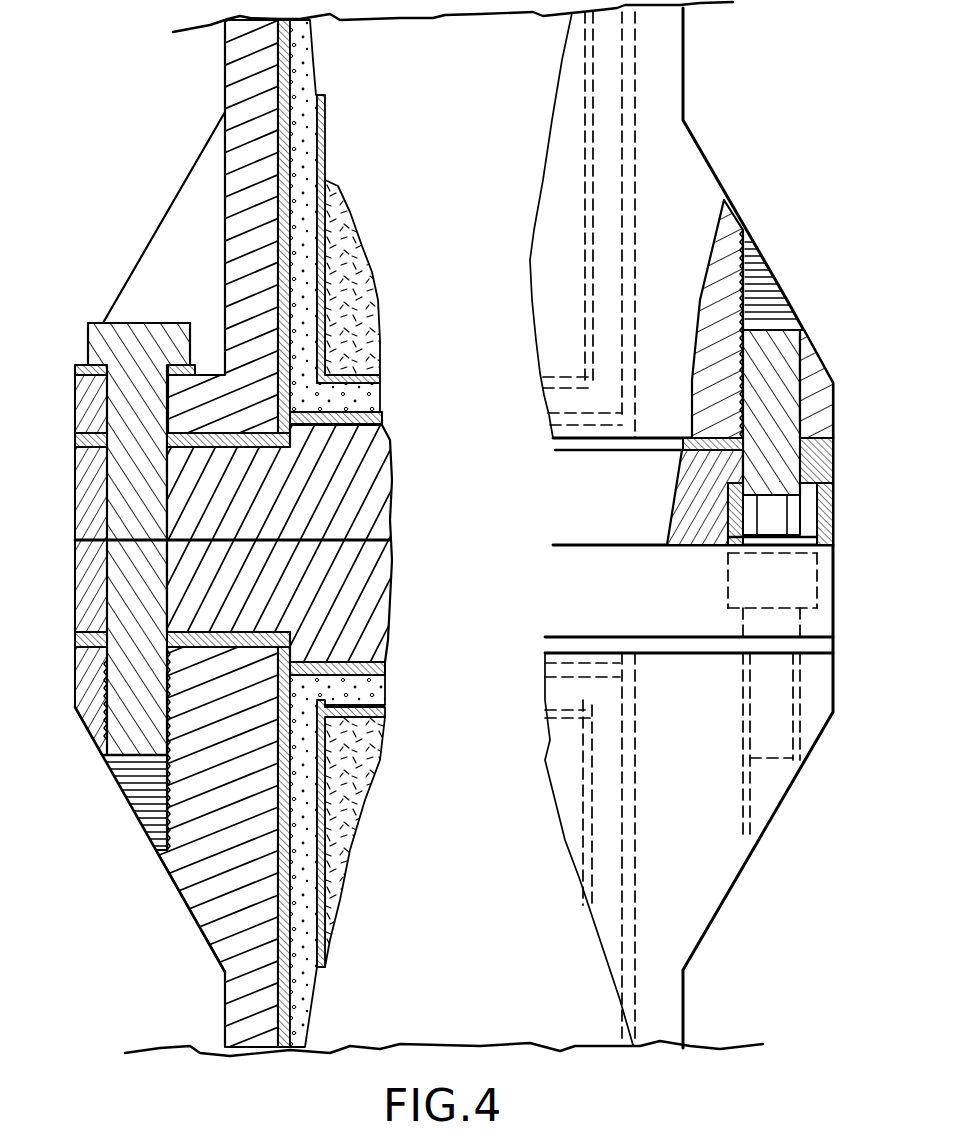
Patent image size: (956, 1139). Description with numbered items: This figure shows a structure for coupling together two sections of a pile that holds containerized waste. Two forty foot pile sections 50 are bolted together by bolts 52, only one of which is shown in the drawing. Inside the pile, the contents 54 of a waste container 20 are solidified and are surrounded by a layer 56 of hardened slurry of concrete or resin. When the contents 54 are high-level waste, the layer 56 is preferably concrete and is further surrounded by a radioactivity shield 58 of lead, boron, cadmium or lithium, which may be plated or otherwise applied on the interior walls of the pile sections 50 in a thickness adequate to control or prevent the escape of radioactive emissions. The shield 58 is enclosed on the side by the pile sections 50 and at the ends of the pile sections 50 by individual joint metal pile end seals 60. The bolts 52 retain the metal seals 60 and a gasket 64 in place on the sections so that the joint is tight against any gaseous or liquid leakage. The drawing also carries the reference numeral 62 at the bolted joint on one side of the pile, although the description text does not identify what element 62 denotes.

The waste container 20 is at (327, 113).
The pile section 50 is at (225, 72).
The bolt 52 is at (88, 342).
The contents 54 is at (345, 237).
The layer of hardened slurry of concrete or resin 56 is at (312, 62).
The radioactivity shield 58 is at (278, 213).
The joint metal pile end seal 60 is at (392, 490).
The bolt assembly 62 is at (833, 470).
The gasket 64 is at (76, 437).